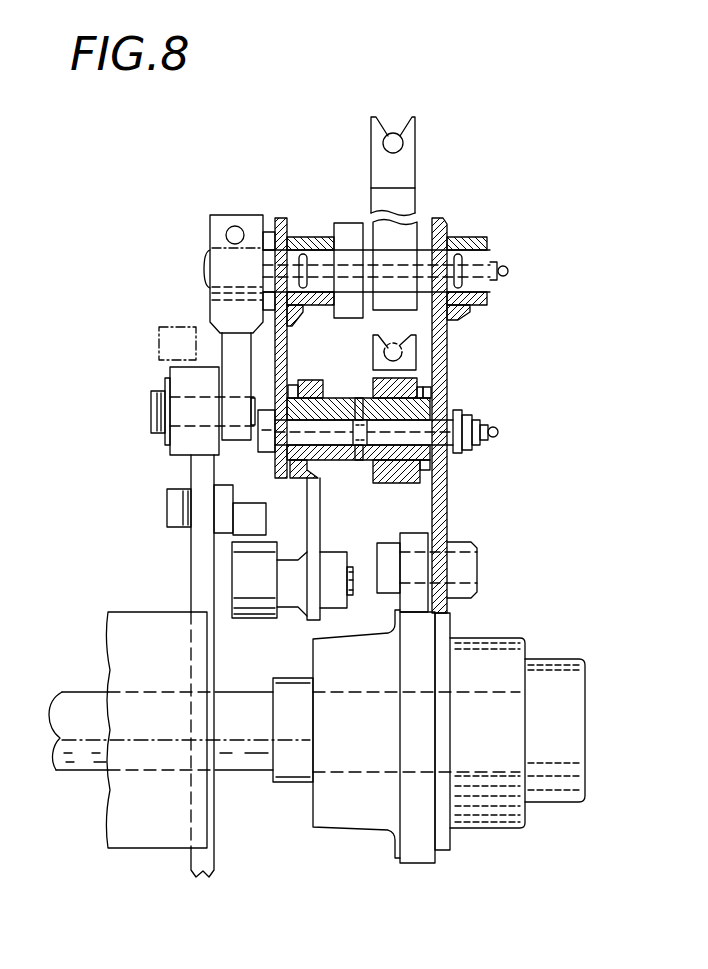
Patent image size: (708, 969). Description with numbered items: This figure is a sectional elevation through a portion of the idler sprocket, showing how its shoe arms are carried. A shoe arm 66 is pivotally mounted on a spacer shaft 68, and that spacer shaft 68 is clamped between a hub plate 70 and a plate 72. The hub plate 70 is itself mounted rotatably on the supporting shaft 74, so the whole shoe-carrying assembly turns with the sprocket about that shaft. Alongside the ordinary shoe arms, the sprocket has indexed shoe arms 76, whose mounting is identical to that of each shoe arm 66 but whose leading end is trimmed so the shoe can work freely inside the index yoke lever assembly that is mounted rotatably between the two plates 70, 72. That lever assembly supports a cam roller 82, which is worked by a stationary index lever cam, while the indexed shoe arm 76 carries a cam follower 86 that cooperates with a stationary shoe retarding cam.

The shoe arm 66 is at (418, 361).
The spacer shaft 68 is at (431, 411).
The hub plate 70 is at (444, 221).
The plate 72 is at (288, 221).
The supporting shaft 74 is at (236, 767).
The indexed shoe arm 76 is at (417, 168).
The cam roller 82 is at (268, 619).
The cam follower 86 is at (187, 380).